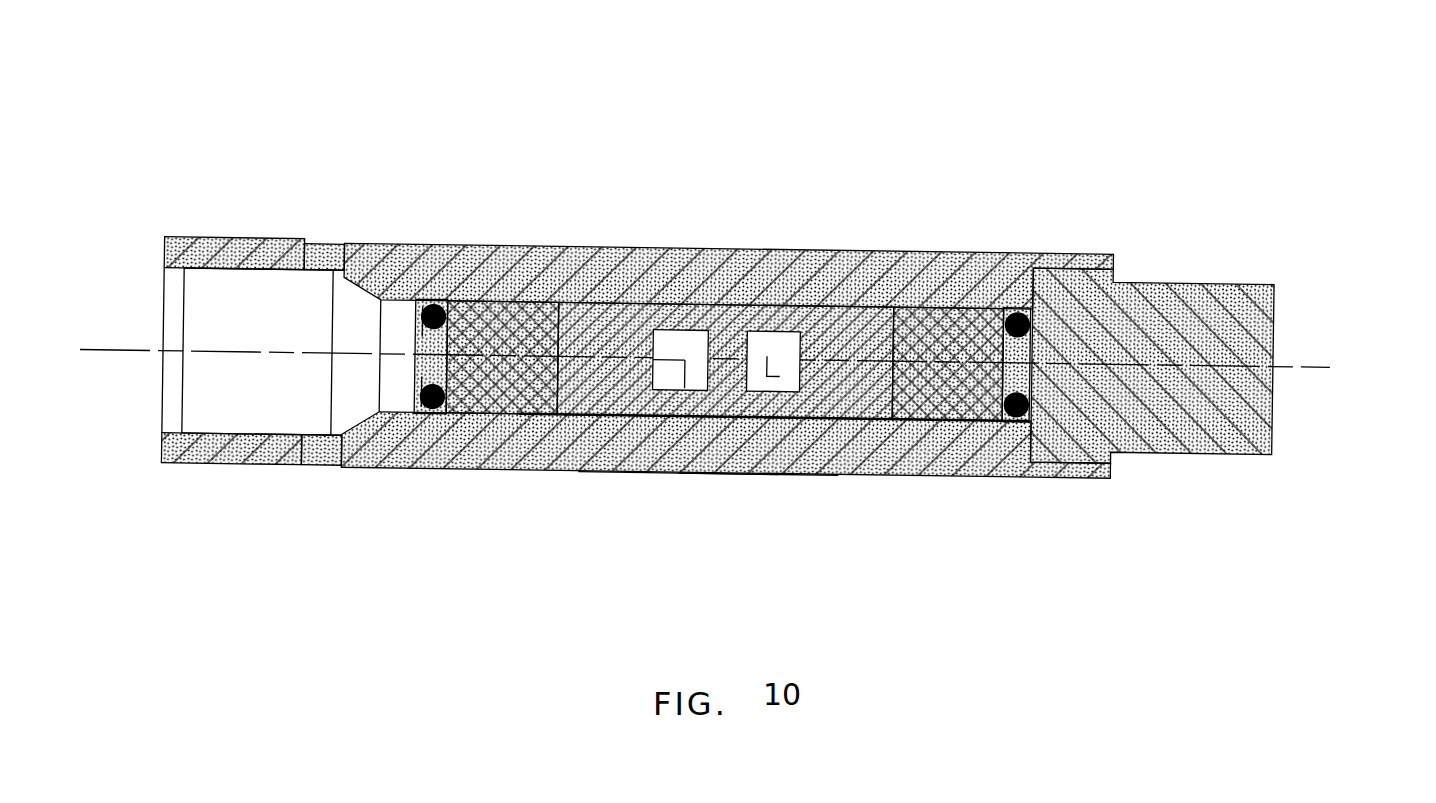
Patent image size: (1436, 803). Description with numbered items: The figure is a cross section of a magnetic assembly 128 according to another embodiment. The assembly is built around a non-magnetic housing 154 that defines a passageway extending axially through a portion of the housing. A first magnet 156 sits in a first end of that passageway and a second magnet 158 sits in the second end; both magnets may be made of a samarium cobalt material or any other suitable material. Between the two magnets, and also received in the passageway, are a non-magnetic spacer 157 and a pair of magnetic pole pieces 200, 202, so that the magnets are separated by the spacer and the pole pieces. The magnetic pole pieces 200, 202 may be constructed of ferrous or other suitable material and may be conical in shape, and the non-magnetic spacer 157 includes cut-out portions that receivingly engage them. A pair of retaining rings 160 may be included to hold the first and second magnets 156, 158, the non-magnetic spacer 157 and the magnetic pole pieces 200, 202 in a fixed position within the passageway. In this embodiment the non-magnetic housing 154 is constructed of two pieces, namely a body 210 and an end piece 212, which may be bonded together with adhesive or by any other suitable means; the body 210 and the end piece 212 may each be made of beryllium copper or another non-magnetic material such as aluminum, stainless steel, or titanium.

The magnetic assembly 128 is at (690, 85).
The non-magnetic housing 154 is at (552, 240).
The first magnet 156 is at (497, 415).
The non-magnetic spacer 157 is at (735, 300).
The second magnet 158 is at (967, 308).
The retaining ring 160 is at (428, 300).
The magnetic pole piece 200 is at (748, 475).
The magnetic pole piece 202 is at (860, 417).
The body 210 is at (703, 473).
The end piece 212 is at (1273, 308).